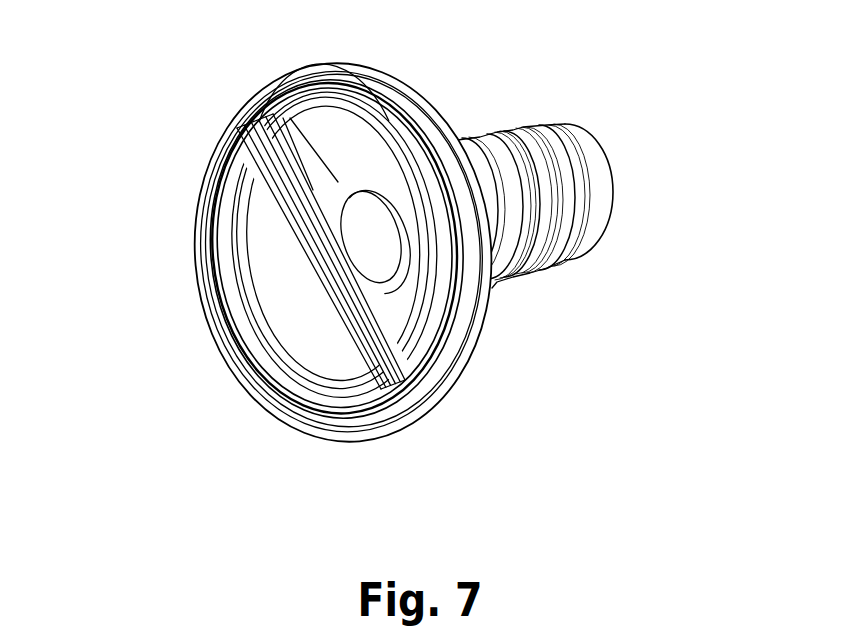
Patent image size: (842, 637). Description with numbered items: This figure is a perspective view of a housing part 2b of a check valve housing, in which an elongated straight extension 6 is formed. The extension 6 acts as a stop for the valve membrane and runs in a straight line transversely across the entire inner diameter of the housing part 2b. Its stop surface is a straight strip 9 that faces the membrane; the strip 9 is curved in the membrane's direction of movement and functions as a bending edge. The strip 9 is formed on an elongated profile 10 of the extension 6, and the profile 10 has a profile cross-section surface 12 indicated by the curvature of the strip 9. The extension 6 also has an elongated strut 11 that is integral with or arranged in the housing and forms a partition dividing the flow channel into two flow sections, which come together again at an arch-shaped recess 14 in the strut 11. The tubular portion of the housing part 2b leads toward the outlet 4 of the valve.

The housing part 2b is at (592, 213).
The outlet 4 is at (377, 231).
The extension 6 is at (285, 232).
The strip 9 is at (305, 273).
The profile 10 is at (350, 318).
The strut 11 is at (257, 127).
The profile cross-section surface 12 is at (387, 388).
The arch-shaped recess 14 is at (353, 242).